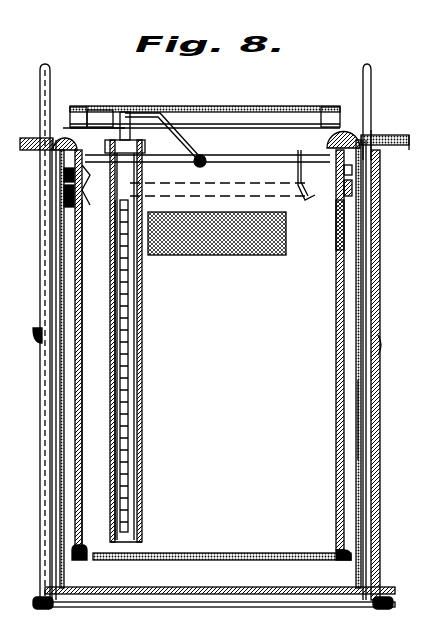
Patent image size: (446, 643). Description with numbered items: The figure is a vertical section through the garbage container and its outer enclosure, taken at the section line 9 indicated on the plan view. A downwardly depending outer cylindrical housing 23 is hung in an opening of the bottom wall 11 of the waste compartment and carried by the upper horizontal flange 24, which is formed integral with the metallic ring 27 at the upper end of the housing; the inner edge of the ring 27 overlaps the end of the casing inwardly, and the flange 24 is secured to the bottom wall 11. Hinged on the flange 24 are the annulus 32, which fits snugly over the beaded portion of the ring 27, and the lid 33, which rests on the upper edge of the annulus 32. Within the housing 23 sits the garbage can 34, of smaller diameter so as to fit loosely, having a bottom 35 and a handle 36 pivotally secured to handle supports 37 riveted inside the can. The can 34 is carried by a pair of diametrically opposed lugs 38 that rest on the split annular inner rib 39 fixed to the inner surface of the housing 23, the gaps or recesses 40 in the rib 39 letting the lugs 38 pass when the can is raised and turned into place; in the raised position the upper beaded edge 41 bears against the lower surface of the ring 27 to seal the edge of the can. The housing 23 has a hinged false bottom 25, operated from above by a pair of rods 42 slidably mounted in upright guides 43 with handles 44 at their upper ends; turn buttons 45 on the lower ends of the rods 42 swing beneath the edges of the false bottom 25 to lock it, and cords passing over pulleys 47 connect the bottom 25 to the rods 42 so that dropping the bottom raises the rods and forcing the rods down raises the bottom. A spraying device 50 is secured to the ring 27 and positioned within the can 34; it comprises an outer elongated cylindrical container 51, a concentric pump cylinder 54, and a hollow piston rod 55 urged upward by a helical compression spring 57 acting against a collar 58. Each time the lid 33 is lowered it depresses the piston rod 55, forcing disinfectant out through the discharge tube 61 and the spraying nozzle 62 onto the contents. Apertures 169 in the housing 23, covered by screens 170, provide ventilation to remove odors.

The plate 9 is at (316, 155).
The bottom wall 11 is at (390, 137).
The outer cylindrical housing 23 is at (356, 440).
The upper horizontal flange 24 is at (378, 126).
The false bottom 25 is at (148, 592).
The metallic ring 27 is at (326, 139).
The annulus 32 is at (329, 107).
The lid 33 is at (245, 106).
The garbage can 34 is at (233, 364).
The bottom 35 is at (195, 548).
The handle 36 is at (276, 162).
The handle supports 37 is at (322, 192).
The lugs 38 is at (62, 180).
The split annular inner rib 39 is at (62, 200).
The recesses 40 is at (427, 198).
The upper beaded edge 41 is at (65, 125).
The rods 42 is at (48, 476).
The upright guides 43 is at (48, 272).
The handles 44 is at (44, 65).
The turn buttons 45 is at (48, 609).
The pulleys 47 is at (36, 330).
The spraying device 50 is at (140, 400).
The outer elongated cylindrical container 51 is at (142, 300).
The pump cylinder 54 is at (128, 348).
The hollow piston rod 55 is at (142, 134).
The helical compression spring 57 is at (104, 108).
The collar 58 is at (134, 107).
The discharge tube 61 is at (192, 113).
The spraying nozzle 62 is at (205, 142).
The apertures 169 is at (340, 258).
The screens 170 is at (333, 237).